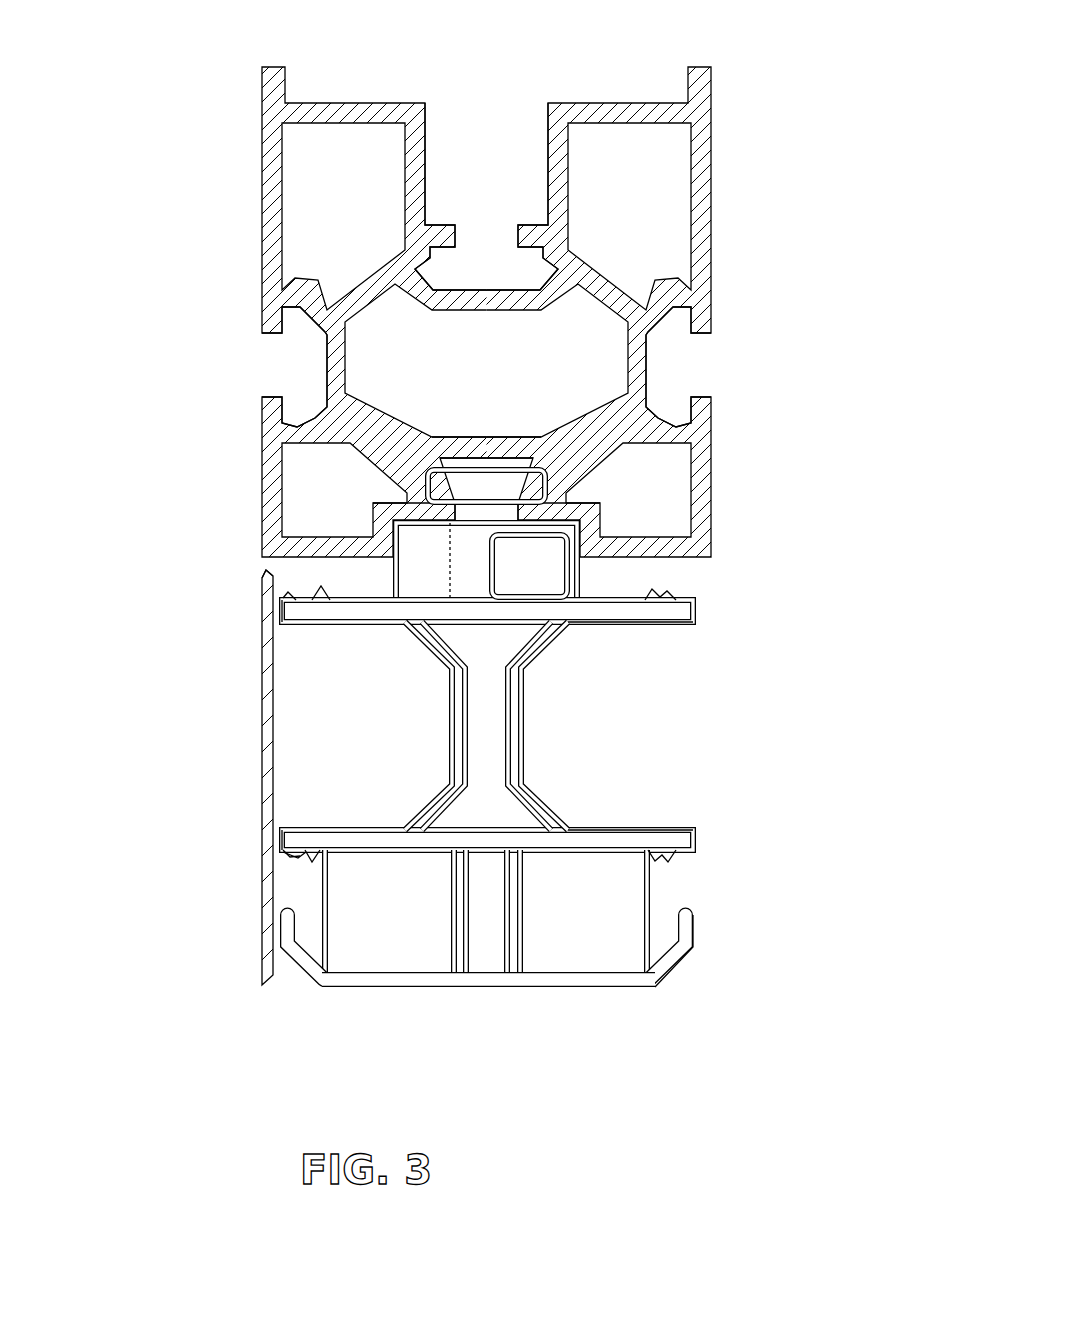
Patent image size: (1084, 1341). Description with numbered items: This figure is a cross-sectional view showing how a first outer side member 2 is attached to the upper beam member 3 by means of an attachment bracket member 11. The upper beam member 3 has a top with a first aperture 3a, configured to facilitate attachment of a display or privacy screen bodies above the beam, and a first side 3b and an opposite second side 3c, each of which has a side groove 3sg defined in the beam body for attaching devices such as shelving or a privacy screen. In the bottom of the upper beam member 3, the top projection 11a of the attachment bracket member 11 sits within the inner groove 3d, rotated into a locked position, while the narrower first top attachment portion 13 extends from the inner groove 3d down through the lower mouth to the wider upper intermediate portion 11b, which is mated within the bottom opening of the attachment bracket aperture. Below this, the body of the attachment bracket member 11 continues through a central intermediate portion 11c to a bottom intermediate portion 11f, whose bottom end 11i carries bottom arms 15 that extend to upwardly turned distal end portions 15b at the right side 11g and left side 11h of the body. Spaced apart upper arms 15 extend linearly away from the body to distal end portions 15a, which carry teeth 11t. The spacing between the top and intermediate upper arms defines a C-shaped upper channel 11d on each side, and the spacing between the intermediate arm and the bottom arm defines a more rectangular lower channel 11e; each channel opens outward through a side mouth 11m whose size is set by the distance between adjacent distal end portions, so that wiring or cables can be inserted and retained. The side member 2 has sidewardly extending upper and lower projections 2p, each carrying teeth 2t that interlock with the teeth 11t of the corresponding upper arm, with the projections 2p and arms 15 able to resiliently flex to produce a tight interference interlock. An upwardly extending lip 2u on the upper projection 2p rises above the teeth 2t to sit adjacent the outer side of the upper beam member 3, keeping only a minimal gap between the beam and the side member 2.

The upper beam member 3 is at (766, 190).
The first aperture 3a is at (462, 168).
The first side 3b is at (262, 218).
The second side 3c is at (692, 222).
The side groove 3sg is at (268, 360).
The inner groove 3d is at (450, 458).
The first top attachment portion 13 is at (425, 502).
The attachment bracket member 11 is at (757, 663).
The top projection 11a is at (508, 485).
The upper intermediate portion 11b is at (474, 552).
The central intermediate portion 11c is at (528, 738).
The side mouth 11m is at (725, 734).
The upper channel 11d is at (681, 764).
The lower channel 11e is at (604, 882).
The bottom intermediate portion 11f is at (481, 919).
The right side 11g is at (281, 987).
The left side 11h is at (710, 999).
The bottom end 11i is at (506, 996).
The teeth 11t is at (294, 607).
The arms 15 is at (277, 659).
The distal end portion of upper arm 15a is at (726, 605).
The distal end portion of bottom arm 15b is at (729, 938).
The outer side member 2 is at (254, 708).
The lip 2u is at (255, 573).
The teeth 2t is at (304, 589).
The projection 2p is at (298, 858).